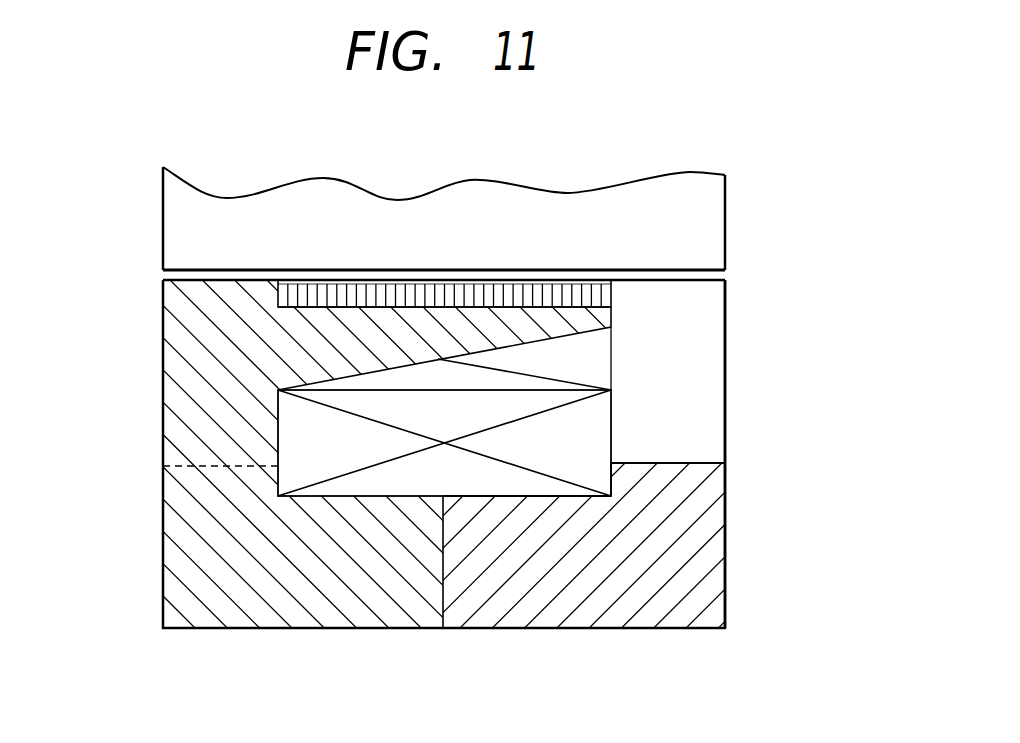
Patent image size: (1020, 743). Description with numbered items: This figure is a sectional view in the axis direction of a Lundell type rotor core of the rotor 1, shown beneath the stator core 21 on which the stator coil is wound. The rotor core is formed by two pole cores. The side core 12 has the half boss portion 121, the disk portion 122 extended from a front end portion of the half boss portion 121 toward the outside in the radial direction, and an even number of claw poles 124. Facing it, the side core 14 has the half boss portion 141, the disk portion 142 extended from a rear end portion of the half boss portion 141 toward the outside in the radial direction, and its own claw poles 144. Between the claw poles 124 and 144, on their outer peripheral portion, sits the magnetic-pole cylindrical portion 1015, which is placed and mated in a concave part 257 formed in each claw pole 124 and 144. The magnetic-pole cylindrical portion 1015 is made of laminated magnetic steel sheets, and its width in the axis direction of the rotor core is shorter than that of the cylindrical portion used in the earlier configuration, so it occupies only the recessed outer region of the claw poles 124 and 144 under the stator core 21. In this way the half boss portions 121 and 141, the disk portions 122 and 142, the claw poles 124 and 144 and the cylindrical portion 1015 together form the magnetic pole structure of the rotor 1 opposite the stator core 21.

The rotor 1 is at (748, 354).
The side core 12 is at (146, 499).
The side core 14 is at (748, 526).
The stator core 21 is at (703, 210).
The half boss portion 121 is at (248, 593).
The disk portion 122 is at (180, 372).
The claw pole 124 is at (395, 333).
The half boss portion 141 is at (485, 583).
The disk portion 142 is at (703, 410).
The claw pole 144 is at (553, 355).
The concave part 257 is at (318, 307).
The magnetic-pole cylindrical portion 1015 is at (464, 272).